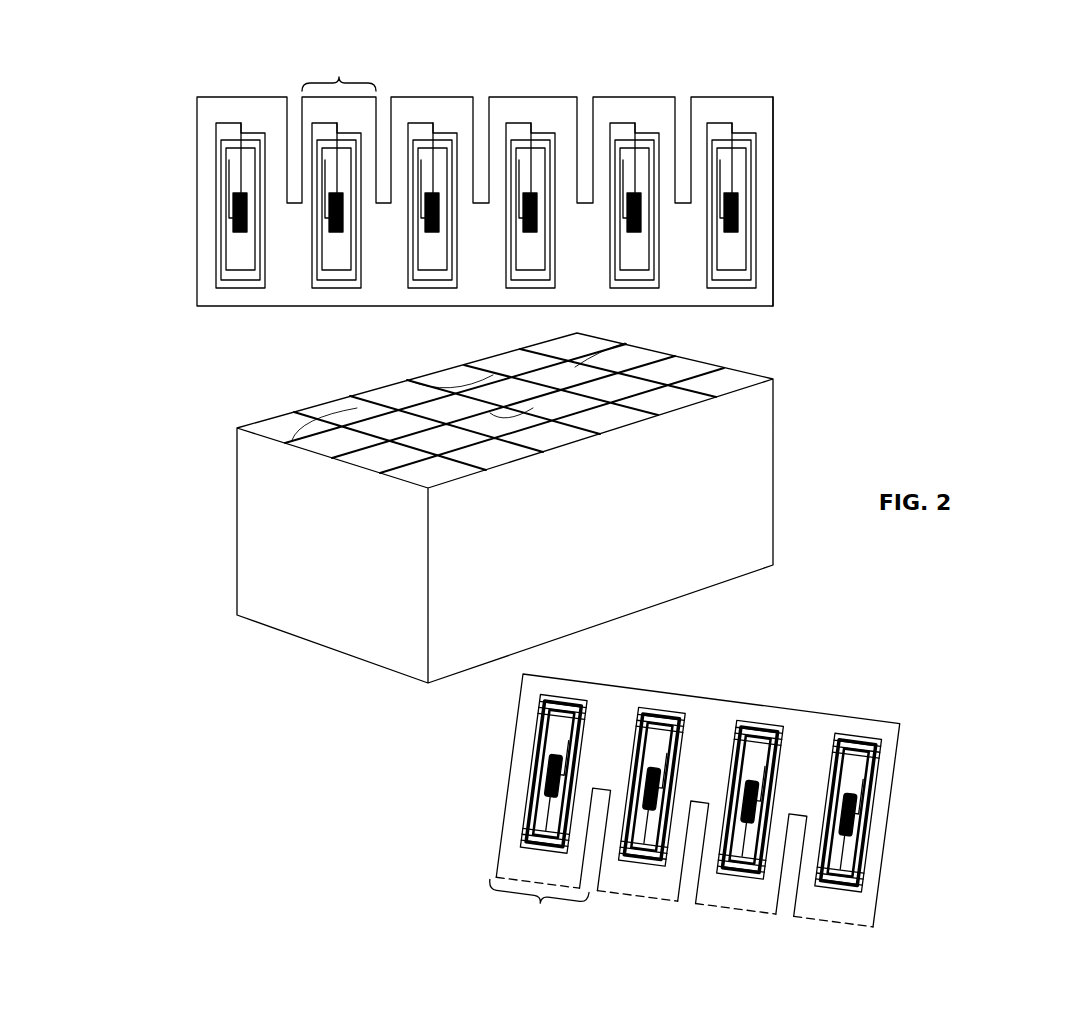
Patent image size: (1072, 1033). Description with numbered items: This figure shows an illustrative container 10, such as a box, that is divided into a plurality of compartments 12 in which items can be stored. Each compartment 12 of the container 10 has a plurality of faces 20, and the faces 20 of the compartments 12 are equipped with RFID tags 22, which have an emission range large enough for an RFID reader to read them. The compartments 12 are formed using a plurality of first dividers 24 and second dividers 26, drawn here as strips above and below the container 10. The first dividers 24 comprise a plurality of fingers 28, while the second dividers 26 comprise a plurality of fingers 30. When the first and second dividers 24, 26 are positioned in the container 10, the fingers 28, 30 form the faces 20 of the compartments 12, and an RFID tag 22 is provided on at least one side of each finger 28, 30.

The container 10 is at (248, 541).
The compartment 12 is at (290, 418).
The face 20 is at (645, 105).
The RFID tag 22 is at (762, 202).
The first divider 24 is at (186, 183).
The second divider 26 is at (483, 786).
The finger 28 is at (339, 72).
The finger 30 is at (538, 904).